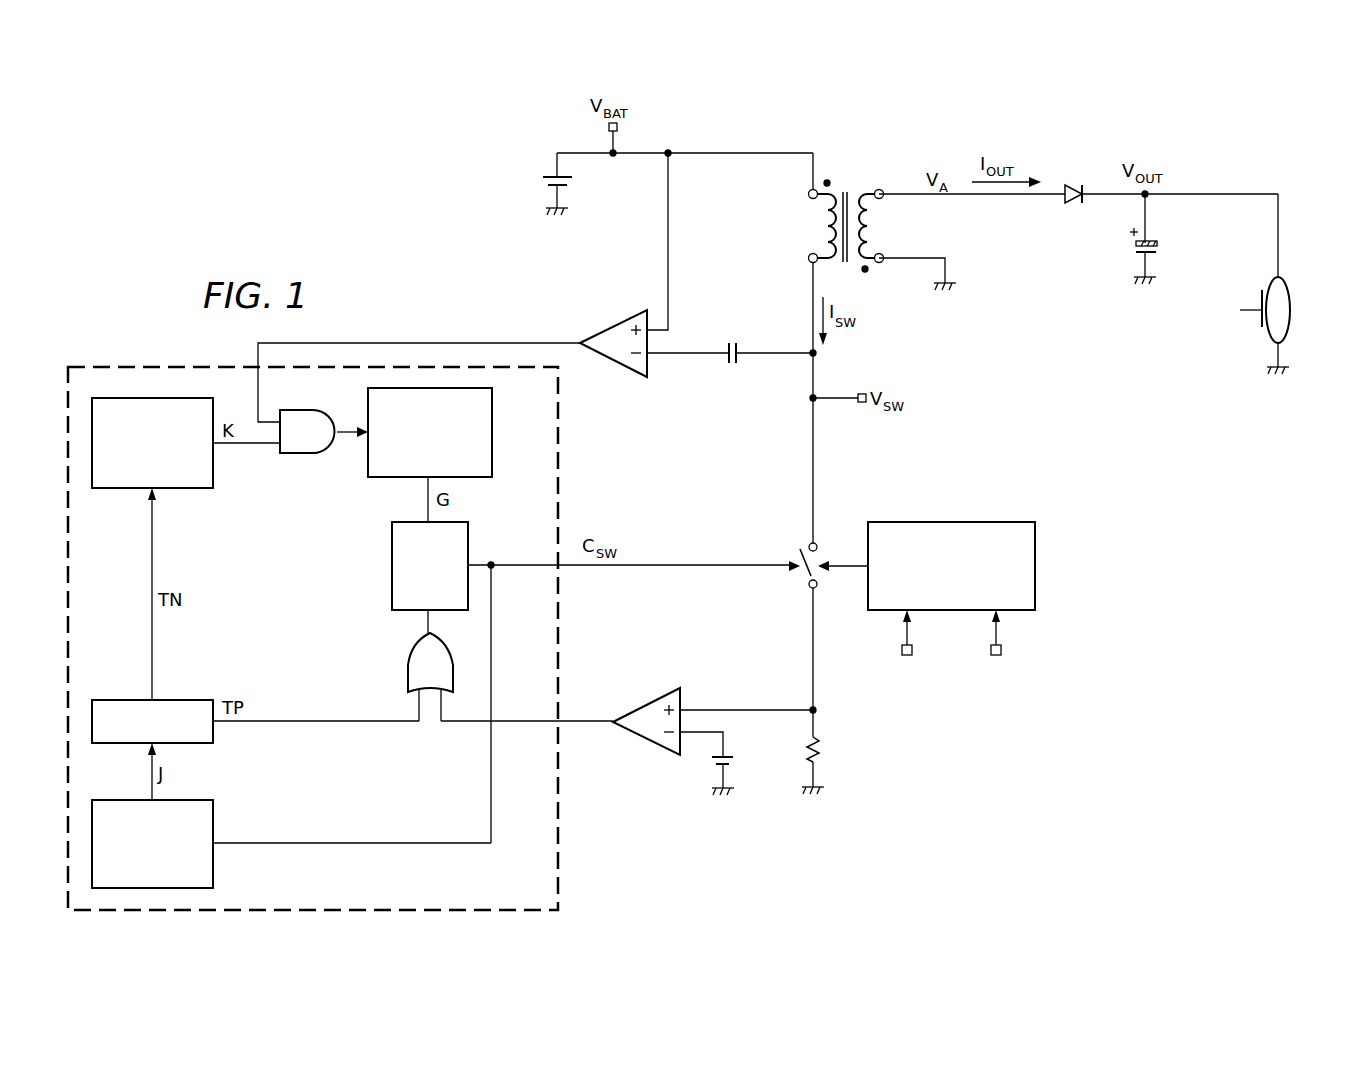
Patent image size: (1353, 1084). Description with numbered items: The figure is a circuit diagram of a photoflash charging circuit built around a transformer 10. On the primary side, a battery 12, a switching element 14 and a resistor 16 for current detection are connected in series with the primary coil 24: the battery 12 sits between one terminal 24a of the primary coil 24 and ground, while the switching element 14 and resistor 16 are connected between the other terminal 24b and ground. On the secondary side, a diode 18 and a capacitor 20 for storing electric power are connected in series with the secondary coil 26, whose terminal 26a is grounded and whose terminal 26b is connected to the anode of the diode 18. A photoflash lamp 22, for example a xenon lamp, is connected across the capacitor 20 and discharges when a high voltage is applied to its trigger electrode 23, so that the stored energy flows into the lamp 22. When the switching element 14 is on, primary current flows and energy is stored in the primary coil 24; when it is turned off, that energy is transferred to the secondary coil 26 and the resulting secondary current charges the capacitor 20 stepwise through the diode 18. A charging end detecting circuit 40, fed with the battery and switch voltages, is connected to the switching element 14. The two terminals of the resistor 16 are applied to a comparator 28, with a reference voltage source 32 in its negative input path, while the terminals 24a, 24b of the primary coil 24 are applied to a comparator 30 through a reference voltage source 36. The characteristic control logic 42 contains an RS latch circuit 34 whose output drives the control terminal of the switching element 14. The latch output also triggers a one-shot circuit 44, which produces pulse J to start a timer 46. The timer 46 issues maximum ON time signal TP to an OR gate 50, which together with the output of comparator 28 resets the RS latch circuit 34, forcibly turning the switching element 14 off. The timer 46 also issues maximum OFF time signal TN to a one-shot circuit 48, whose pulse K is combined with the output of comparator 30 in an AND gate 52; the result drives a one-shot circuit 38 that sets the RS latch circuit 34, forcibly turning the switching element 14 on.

The transformer 10 is at (832, 227).
The battery 12 is at (540, 183).
The switching element 14 is at (803, 574).
The resistor for current detection 16 is at (820, 748).
The diode 18 is at (1077, 183).
The capacitor 20 is at (1158, 246).
The photoflash lamp 22 is at (1292, 300).
The trigger electrode 23 is at (1258, 322).
The primary coil 24 is at (788, 228).
The terminal of primary coil 24a is at (806, 190).
The terminal of primary coil 24b is at (779, 271).
The secondary coil 26 is at (891, 227).
The terminal of secondary coil 26a is at (883, 264).
The terminal of secondary coil 26b is at (881, 188).
The comparator 28 is at (648, 702).
The comparator 30 is at (612, 321).
The reference voltage source 32 is at (710, 763).
The RS latch circuit 34 is at (391, 571).
The reference voltage source 36 is at (732, 369).
The one-shot circuit 38 is at (492, 412).
The charging end detecting circuit 40 is at (952, 521).
The control logic 42 is at (113, 363).
The one-shot circuit 44 is at (214, 866).
The timer 46 is at (123, 698).
The one-shot circuit 48 is at (123, 490).
The OR gate 50 is at (408, 656).
The AND gate 52 is at (306, 455).